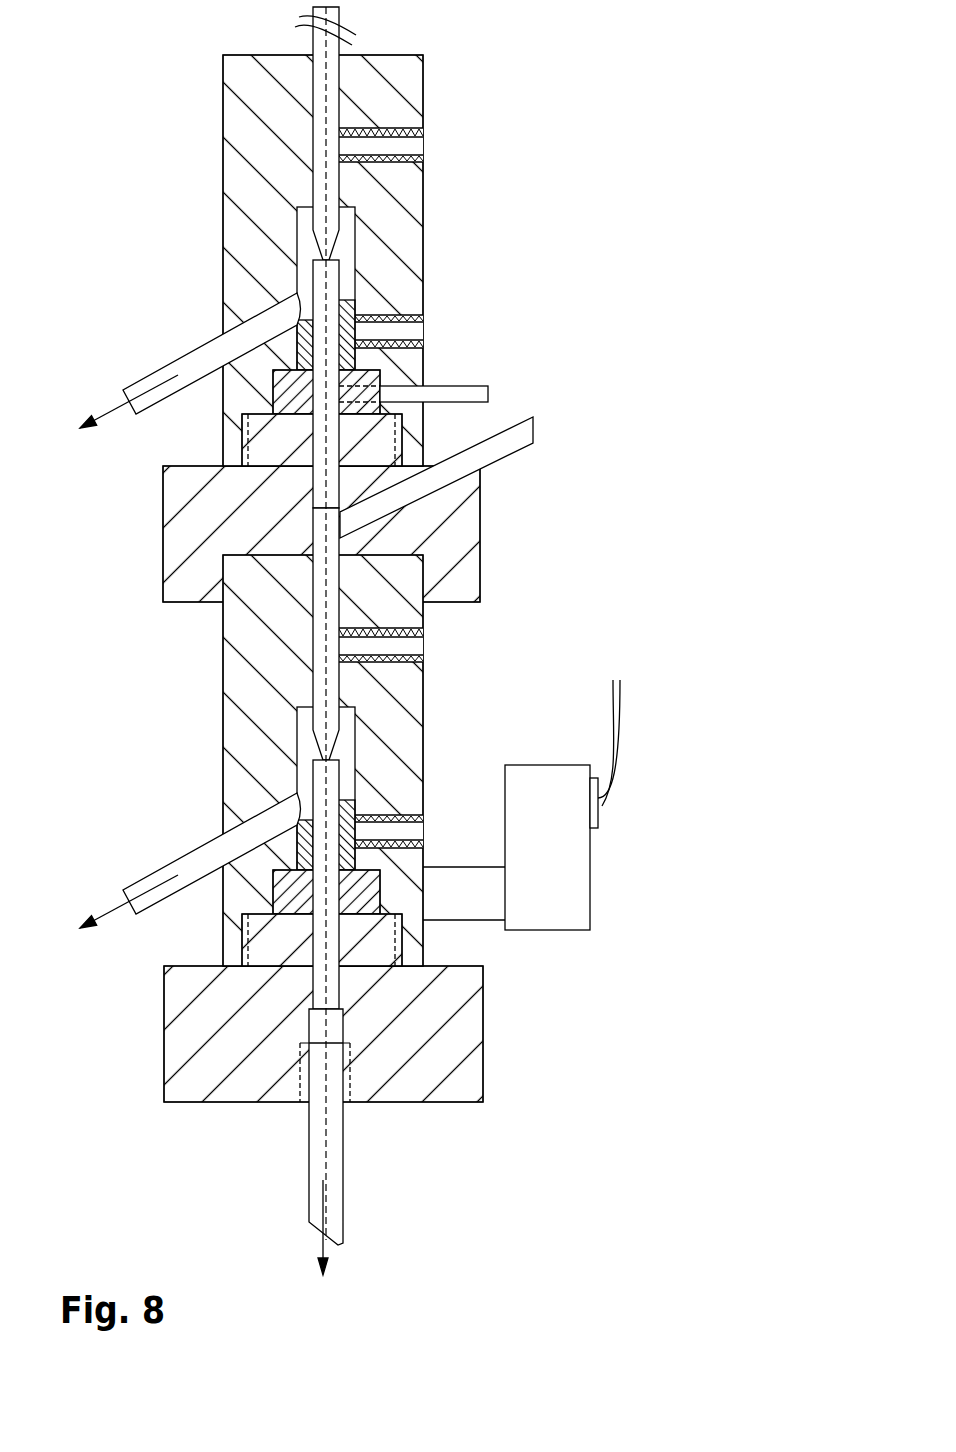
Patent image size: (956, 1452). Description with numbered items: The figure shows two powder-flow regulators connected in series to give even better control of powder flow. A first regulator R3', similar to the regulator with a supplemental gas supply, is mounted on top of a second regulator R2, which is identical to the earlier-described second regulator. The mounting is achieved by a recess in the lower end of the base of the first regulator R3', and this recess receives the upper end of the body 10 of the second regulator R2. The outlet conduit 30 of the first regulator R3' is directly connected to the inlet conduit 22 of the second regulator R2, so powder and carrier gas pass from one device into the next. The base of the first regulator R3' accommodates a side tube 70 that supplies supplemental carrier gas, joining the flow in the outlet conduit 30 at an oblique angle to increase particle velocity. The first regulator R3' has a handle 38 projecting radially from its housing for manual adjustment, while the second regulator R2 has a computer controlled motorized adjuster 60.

The outlet conduit 30 is at (327, 443).
The inlet conduit 22 is at (332, 612).
The handle 38 is at (443, 386).
The side tube 70 is at (495, 450).
The housing 10 is at (393, 720).
The motorized adjuster 60 is at (530, 820).
The second regulator R2 is at (190, 781).
The first regulator R3' is at (316, 260).